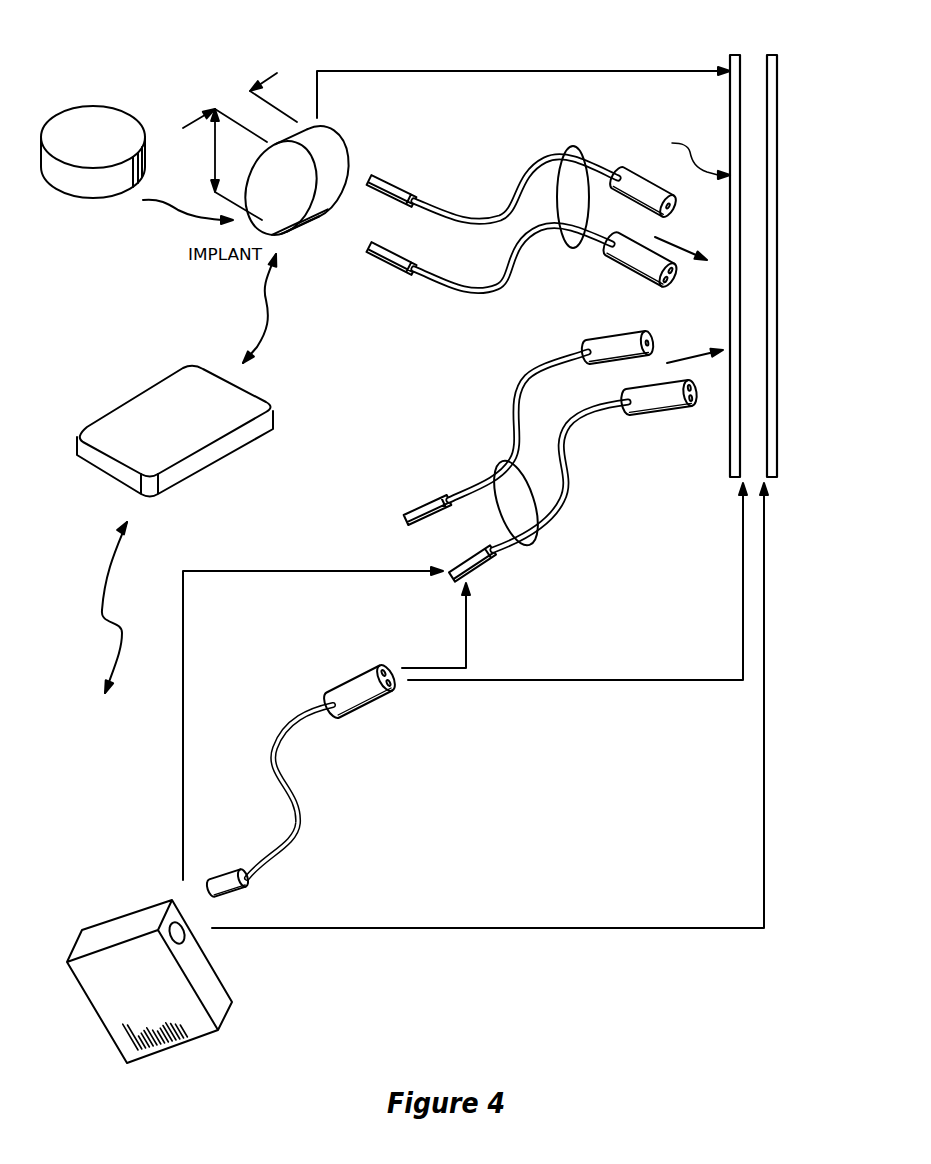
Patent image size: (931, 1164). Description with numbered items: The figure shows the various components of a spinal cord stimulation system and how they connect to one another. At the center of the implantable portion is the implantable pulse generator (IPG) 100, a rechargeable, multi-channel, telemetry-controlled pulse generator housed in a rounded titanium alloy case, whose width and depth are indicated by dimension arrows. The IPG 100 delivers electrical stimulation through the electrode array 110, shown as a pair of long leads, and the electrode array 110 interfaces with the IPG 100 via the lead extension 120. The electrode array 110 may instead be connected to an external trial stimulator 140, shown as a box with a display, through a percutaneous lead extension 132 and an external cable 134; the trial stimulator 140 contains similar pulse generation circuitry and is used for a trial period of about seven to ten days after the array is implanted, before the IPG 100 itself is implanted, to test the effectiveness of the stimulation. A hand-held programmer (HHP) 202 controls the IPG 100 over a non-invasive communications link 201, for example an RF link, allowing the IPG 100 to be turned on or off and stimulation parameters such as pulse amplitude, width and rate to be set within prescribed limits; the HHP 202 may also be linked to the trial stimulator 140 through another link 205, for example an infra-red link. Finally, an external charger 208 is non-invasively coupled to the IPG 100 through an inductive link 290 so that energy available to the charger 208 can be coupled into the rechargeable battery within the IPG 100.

The external charger 208 is at (95, 113).
The implantable pulse generator (IPG) 100 is at (332, 139).
The link 290 is at (178, 210).
The communications link 201 is at (268, 298).
The hand-held programmer (HHP) 202 is at (152, 400).
The link 205 is at (112, 565).
The lead extension 120 is at (572, 143).
The electrode array 110 is at (751, 56).
The percutaneous lead extension 132 is at (490, 467).
The external cable 134 is at (299, 718).
The external trial stimulator 140 is at (118, 928).